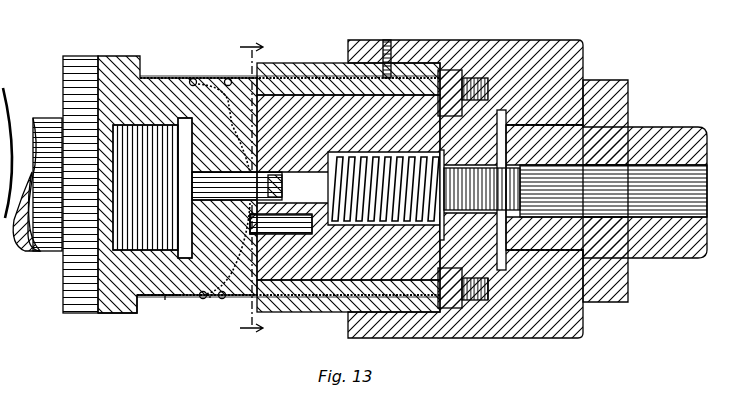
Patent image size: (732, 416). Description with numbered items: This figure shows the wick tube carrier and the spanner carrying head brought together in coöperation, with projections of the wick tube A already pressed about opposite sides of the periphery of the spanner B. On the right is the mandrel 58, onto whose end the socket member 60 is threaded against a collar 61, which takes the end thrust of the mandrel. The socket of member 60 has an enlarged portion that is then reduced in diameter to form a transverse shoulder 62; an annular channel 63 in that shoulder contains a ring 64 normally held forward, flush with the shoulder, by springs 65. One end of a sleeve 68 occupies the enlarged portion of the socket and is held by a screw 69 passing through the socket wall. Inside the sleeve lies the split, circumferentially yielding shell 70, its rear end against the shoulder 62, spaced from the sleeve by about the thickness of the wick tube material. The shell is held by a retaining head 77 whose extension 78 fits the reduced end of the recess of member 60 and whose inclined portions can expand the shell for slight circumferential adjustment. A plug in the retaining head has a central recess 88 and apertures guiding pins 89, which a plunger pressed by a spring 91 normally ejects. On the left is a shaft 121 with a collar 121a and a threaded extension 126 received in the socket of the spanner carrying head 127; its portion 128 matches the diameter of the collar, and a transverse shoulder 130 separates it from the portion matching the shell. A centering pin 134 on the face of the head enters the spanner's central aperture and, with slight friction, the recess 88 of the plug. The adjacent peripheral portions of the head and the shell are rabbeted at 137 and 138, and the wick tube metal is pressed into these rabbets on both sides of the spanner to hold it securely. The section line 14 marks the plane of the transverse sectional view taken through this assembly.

The section line 14 is at (250, 196).
The mandrel 58 is at (655, 132).
The socket member 60 is at (580, 66).
The collar 61 is at (618, 84).
The shoulder 62 is at (467, 268).
The annular channel 63 is at (447, 308).
The ring 64 is at (465, 300).
The springs 65 is at (488, 272).
The sleeve 68 is at (327, 311).
The screw 69 is at (390, 44).
The shell 70 is at (357, 268).
The retaining head 77 is at (405, 115).
The extension 78 is at (476, 124).
The central recess 88 is at (275, 93).
The pins 89 is at (285, 236).
The spring 91 is at (343, 158).
The shaft 121 is at (42, 124).
The collar 121a is at (78, 58).
The threaded extension 126 is at (120, 262).
The spanner carrying head 127 is at (165, 284).
The portion 128 is at (115, 66).
The transverse shoulder 130 is at (143, 77).
The centering pin 134 is at (215, 258).
The rabbeted portion 137 is at (193, 77).
The rabbeted portion 138 is at (232, 79).
The wick tube A is at (165, 300).
The spanner B is at (211, 300).